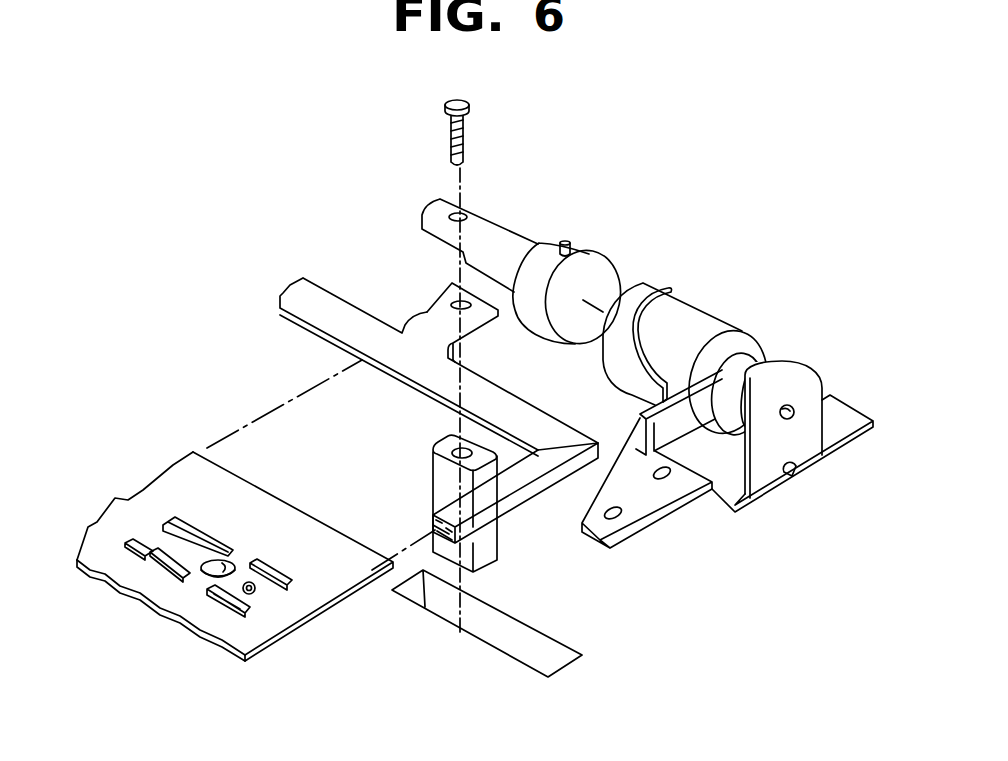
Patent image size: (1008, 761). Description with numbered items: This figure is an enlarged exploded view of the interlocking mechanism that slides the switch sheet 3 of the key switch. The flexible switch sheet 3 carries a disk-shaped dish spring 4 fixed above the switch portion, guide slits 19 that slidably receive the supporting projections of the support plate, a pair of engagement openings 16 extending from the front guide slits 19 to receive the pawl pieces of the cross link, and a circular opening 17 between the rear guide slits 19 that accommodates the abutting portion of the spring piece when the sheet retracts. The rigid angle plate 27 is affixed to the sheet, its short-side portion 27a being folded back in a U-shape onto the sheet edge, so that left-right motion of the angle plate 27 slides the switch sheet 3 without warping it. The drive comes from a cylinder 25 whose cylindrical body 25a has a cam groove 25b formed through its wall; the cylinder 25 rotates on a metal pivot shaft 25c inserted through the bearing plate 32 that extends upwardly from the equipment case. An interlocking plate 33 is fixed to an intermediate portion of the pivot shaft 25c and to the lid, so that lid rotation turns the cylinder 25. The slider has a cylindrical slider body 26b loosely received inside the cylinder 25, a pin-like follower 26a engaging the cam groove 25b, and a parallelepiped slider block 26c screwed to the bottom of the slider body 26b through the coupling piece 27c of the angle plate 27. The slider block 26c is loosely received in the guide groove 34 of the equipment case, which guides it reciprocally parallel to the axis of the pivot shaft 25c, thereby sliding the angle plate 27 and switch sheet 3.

The switch sheet 3 is at (232, 628).
The dish spring 4 is at (216, 564).
The engagement opening 16 is at (137, 539).
The circular opening 17 is at (250, 584).
The guide slits 19 is at (172, 567).
The cylinder 25 is at (725, 306).
The cylindrical body 25a is at (712, 328).
The cam groove 25b is at (668, 288).
The pivot shaft 25c is at (789, 405).
The follower 26a is at (566, 241).
The slider body 26b is at (490, 237).
The slider block 26c is at (482, 552).
The angle plate 27 is at (328, 305).
The short-side portion 27a is at (513, 497).
The coupling piece 27c is at (430, 320).
The bearing plate 32 is at (757, 466).
The interlocking plate 33 is at (644, 497).
The guide groove 34 is at (541, 658).